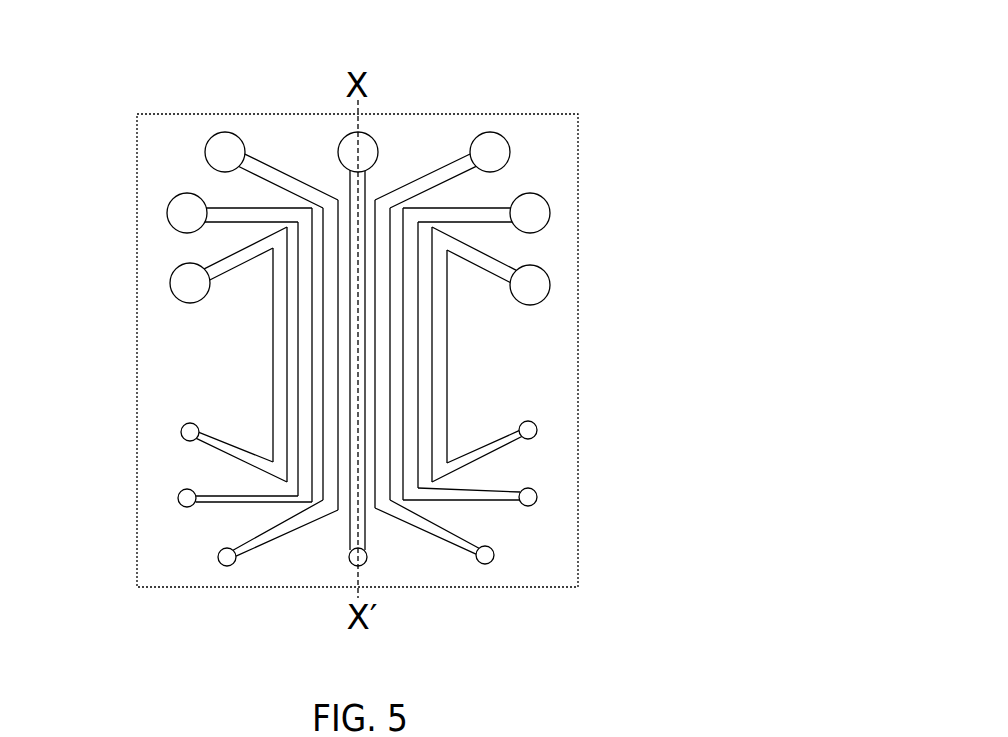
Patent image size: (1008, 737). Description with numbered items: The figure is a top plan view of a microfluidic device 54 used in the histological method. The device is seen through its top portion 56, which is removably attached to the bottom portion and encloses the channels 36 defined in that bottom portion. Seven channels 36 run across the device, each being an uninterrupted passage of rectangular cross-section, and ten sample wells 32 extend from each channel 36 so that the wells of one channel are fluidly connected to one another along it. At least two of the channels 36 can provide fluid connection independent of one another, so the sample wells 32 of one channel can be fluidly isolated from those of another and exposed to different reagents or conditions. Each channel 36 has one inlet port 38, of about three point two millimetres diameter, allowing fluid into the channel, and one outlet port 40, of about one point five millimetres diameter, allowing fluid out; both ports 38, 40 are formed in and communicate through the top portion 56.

The sample wells 32 is at (274, 345).
The channels 36 is at (304, 485).
The inlet port 38 is at (540, 287).
The outlet port 40 is at (494, 560).
The microfluidic device 54 is at (359, 384).
The top portion 56 is at (557, 370).